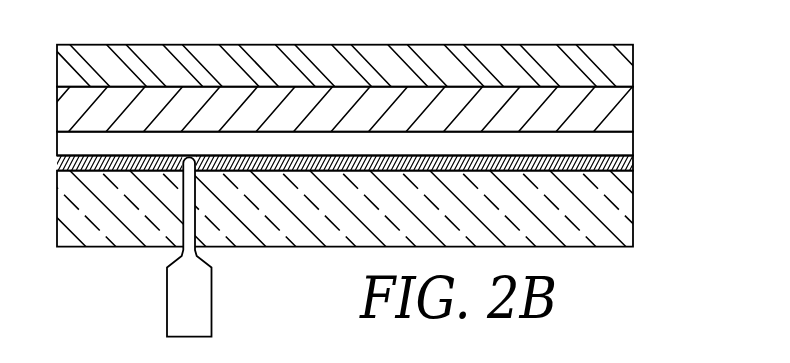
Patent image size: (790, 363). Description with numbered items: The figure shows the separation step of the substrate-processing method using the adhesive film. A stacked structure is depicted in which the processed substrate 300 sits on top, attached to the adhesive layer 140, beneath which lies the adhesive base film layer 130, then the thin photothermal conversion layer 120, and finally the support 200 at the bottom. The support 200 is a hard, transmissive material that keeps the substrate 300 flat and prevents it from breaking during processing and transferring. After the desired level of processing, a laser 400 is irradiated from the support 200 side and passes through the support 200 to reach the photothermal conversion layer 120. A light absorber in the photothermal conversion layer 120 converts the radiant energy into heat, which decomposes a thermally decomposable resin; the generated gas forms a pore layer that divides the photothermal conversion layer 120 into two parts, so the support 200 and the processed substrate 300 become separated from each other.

The substrate 300 is at (623, 65).
The adhesive layer 140 is at (623, 110).
The adhesive base film layer 130 is at (623, 145).
The photothermal conversion layer 120 is at (623, 167).
The support 200 is at (618, 210).
The laser 400 is at (212, 302).